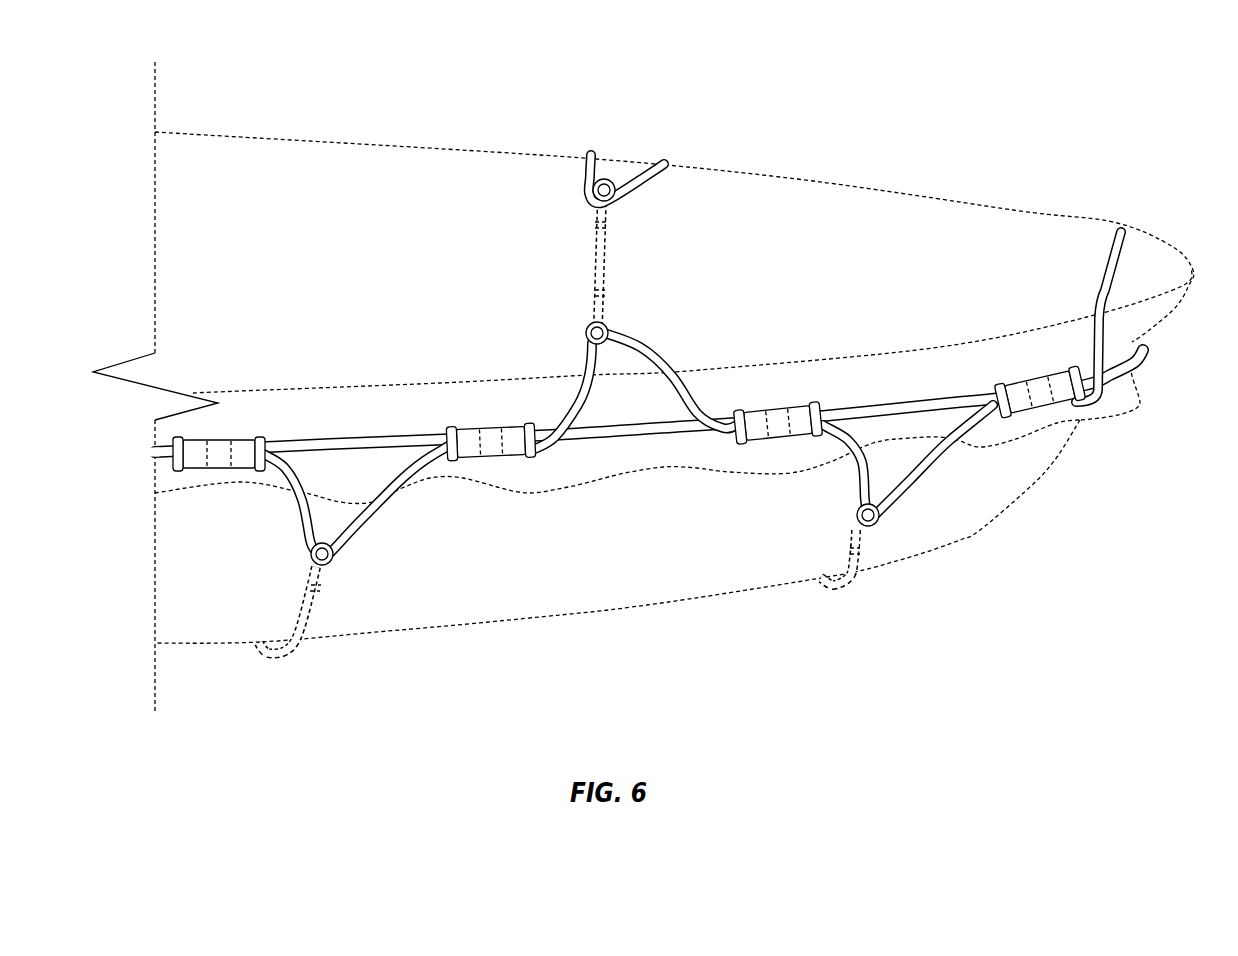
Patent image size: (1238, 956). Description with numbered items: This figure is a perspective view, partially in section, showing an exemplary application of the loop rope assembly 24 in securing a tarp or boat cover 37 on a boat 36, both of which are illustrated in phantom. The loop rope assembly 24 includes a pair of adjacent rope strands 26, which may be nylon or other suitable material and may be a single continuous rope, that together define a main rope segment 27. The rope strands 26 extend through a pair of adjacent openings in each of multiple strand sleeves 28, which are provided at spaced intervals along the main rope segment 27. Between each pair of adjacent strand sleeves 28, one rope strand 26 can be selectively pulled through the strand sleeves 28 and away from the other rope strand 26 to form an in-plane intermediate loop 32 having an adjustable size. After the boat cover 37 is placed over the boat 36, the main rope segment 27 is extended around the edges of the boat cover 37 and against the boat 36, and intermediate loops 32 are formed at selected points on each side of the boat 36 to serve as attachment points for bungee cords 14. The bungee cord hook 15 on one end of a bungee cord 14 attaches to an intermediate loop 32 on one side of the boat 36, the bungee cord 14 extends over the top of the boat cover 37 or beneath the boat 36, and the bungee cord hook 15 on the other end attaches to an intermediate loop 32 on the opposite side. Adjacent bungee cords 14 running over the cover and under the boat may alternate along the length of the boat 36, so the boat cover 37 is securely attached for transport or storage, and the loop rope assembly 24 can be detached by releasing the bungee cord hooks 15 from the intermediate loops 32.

The bungee cord 14 is at (593, 262).
The bungee cord hook 15 is at (608, 218).
The loop rope assembly 24 is at (703, 345).
The rope strand 26 is at (700, 405).
The main rope segment 27 is at (907, 395).
The strand sleeve 28 is at (218, 470).
The intermediate loop 32 is at (653, 187).
The boat 36 is at (643, 607).
The boat cover 37 is at (1103, 420).